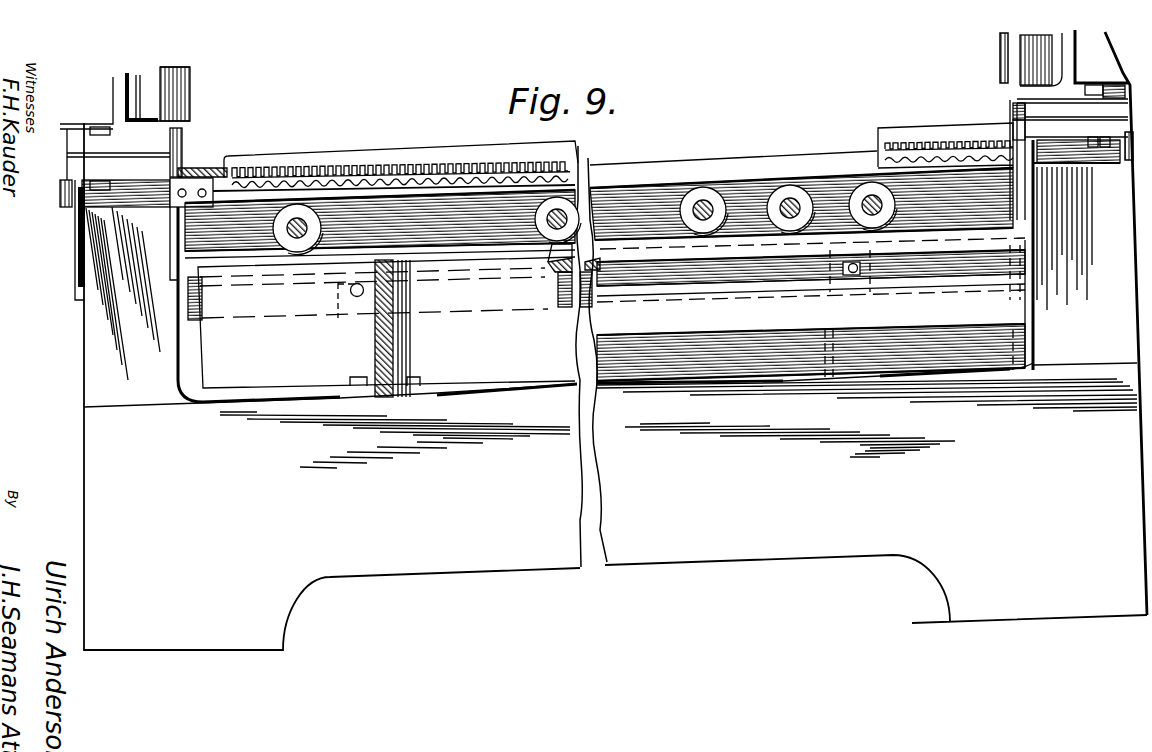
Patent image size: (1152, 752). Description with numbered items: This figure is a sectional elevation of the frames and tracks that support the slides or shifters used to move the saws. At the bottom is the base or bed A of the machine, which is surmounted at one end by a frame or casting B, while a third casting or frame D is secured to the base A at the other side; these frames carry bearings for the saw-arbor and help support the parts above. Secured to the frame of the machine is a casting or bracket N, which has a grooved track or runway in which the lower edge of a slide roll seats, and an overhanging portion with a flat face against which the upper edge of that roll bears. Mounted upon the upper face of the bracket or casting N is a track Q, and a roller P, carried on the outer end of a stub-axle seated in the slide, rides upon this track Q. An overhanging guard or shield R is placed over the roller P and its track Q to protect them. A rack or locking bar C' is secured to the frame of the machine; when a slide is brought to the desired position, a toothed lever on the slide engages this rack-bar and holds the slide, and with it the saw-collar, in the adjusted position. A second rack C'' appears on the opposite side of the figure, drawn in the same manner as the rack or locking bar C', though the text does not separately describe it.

The base or bed A is at (615, 341).
The frame or casting B is at (127, 383).
The rack or locking bar C' is at (395, 154).
The right rack C'' is at (945, 130).
The casting or frame D is at (1040, 326).
The casting or bracket N is at (811, 309).
The roller P is at (552, 230).
The track Q is at (590, 247).
The overhanging guard or shield R is at (673, 167).